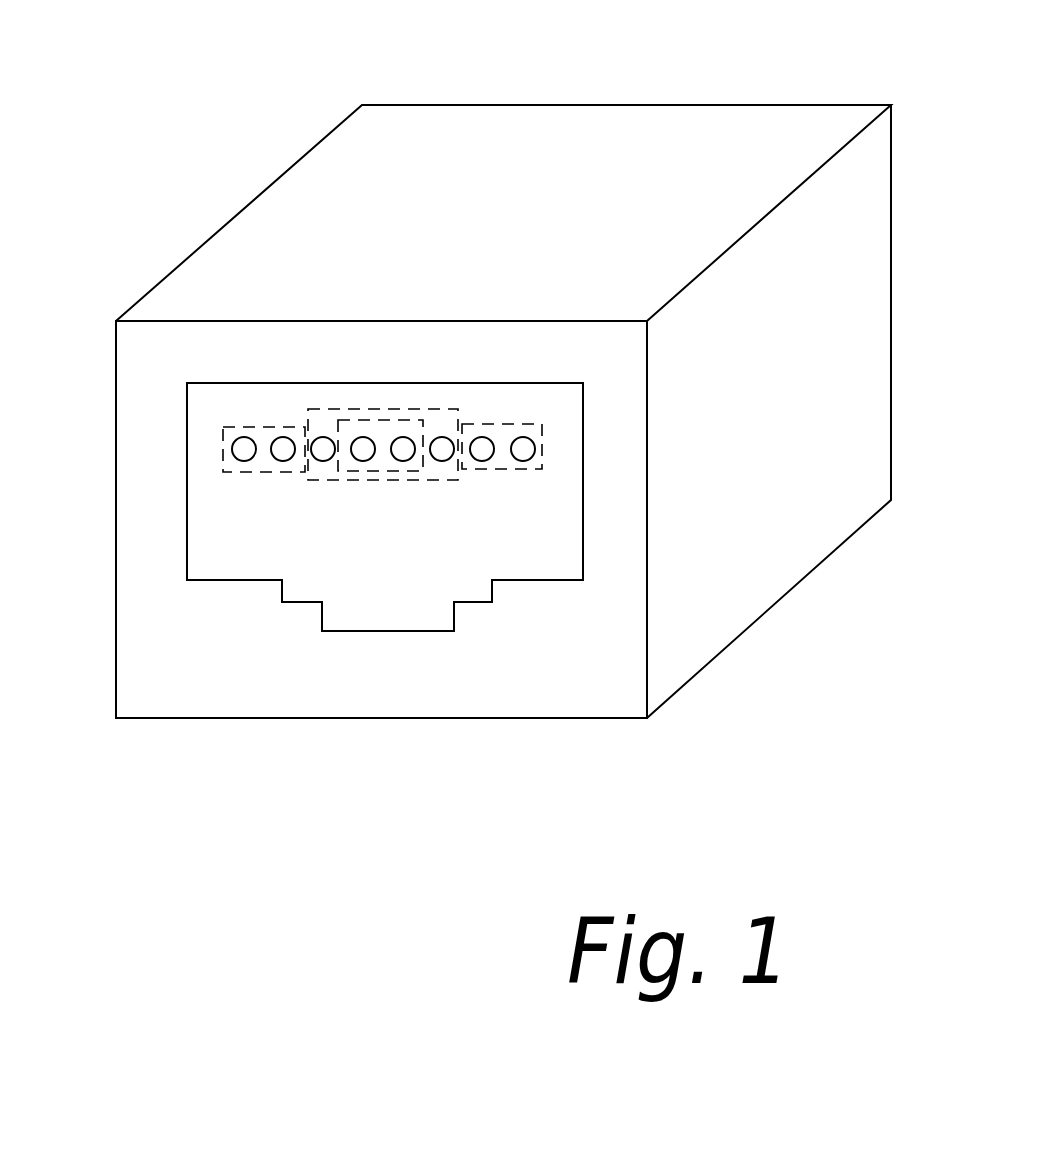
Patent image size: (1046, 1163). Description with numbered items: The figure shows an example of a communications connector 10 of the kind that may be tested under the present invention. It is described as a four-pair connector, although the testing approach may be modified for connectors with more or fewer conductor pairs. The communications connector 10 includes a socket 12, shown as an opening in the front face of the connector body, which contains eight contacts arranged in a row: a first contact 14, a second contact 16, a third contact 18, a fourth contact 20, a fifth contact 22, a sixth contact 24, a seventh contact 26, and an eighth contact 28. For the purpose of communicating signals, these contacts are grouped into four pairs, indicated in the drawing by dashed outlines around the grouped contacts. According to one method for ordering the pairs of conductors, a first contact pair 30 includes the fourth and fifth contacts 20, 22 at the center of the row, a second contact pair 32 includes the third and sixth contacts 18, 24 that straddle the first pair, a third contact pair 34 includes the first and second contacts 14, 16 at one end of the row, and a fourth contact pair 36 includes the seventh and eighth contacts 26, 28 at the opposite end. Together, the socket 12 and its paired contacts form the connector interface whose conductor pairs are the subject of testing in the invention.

The communications connector 10 is at (148, 98).
The socket 12 is at (200, 412).
The first contact 14 is at (244, 437).
The second contact 16 is at (283, 437).
The third contact 18 is at (323, 437).
The fourth contact 20 is at (363, 437).
The fifth contact 22 is at (403, 437).
The sixth contact 24 is at (442, 437).
The seventh contact 26 is at (482, 437).
The eighth contact 28 is at (523, 437).
The first contact pair 30 is at (381, 471).
The second contact pair 32 is at (432, 480).
The third contact pair 34 is at (262, 473).
The fourth contact pair 36 is at (500, 472).